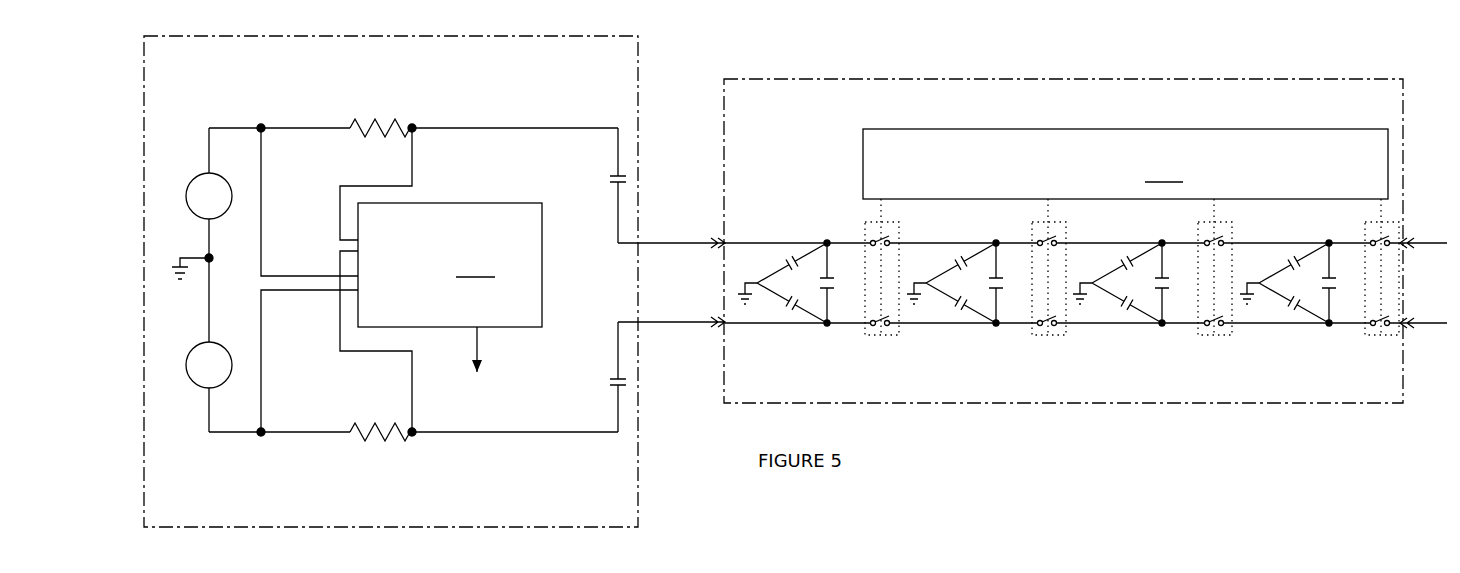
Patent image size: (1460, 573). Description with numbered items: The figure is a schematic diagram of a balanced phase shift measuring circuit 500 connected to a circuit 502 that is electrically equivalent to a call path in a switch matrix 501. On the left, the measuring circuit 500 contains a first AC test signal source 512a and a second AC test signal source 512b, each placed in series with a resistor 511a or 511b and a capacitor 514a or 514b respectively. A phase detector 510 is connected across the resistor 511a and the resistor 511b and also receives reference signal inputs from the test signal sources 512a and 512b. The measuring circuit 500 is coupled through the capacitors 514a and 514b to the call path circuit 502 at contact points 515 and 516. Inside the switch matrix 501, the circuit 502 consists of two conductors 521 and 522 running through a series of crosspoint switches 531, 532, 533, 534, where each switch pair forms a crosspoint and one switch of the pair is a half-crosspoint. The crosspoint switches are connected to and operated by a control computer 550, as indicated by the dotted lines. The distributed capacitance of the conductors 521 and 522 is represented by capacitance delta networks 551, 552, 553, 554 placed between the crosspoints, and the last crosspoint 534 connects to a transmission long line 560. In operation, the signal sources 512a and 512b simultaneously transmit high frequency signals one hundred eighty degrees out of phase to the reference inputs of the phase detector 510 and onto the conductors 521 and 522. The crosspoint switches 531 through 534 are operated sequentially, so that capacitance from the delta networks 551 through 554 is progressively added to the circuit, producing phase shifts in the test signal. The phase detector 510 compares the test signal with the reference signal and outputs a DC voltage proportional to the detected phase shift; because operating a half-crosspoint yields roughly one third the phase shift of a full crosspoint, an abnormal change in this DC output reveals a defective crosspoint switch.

The measuring circuit 500 is at (645, 52).
The switch matrix 501 is at (1177, 79).
The circuit 502 is at (720, 290).
The phase detector 510 is at (450, 287).
The resistor 511a is at (377, 112).
The resistor 511b is at (376, 450).
The first AC test signal source 512a is at (202, 177).
The second AC test signal source 512b is at (203, 345).
The capacitor 514a is at (606, 198).
The capacitor 514b is at (606, 362).
The contact point 515 is at (708, 236).
The contact point 516 is at (710, 330).
The conductor 521 is at (741, 240).
The conductor 522 is at (741, 327).
The crosspoint switch 531 is at (903, 233).
The crosspoint switch 532 is at (1069, 233).
The crosspoint switch 533 is at (1236, 233).
The crosspoint switch 534 is at (1362, 343).
The control computer 550 is at (1125, 164).
The capacitance delta network 551 is at (742, 283).
The capacitance delta network 552 is at (972, 291).
The capacitance delta network 553 is at (1148, 293).
The capacitance delta network 554 is at (1313, 297).
The transmission long line 560 is at (1430, 247).